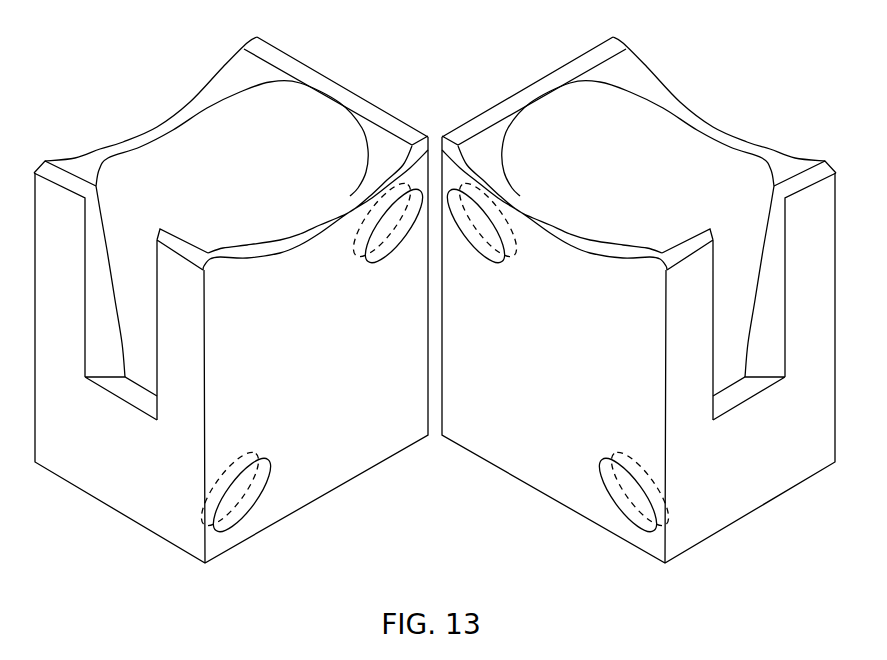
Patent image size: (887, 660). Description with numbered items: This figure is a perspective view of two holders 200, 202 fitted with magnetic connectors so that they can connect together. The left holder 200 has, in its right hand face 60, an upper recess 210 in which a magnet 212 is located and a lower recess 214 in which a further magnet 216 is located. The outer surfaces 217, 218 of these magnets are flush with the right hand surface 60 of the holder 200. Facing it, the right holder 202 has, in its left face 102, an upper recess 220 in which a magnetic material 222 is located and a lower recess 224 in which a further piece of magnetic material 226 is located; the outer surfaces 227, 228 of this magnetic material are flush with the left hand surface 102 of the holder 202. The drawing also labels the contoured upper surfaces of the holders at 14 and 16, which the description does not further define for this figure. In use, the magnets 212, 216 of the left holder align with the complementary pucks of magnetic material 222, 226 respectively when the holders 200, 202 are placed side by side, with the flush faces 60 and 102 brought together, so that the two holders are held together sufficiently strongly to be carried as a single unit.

The right hand face 60 is at (233, 295).
The left face 102 is at (637, 294).
The concave cradle surface edge 14 is at (147, 130).
The chamfered edge of cradle surface 16 is at (312, 223).
The left holder 200 is at (233, 55).
The right holder 202 is at (645, 70).
The upper recess 210 is at (360, 235).
The magnet 212 is at (395, 262).
The outer surface 217 is at (357, 257).
The lower recess 214 is at (237, 457).
The further magnet 216 is at (270, 490).
The outer surface 218 is at (260, 494).
The upper recess 220 is at (485, 235).
The magnetic material 222 is at (472, 252).
The outer surface 227 is at (504, 246).
The lower recess 224 is at (640, 458).
The further piece of magnetic material 226 is at (603, 473).
The outer surface 228 is at (614, 484).